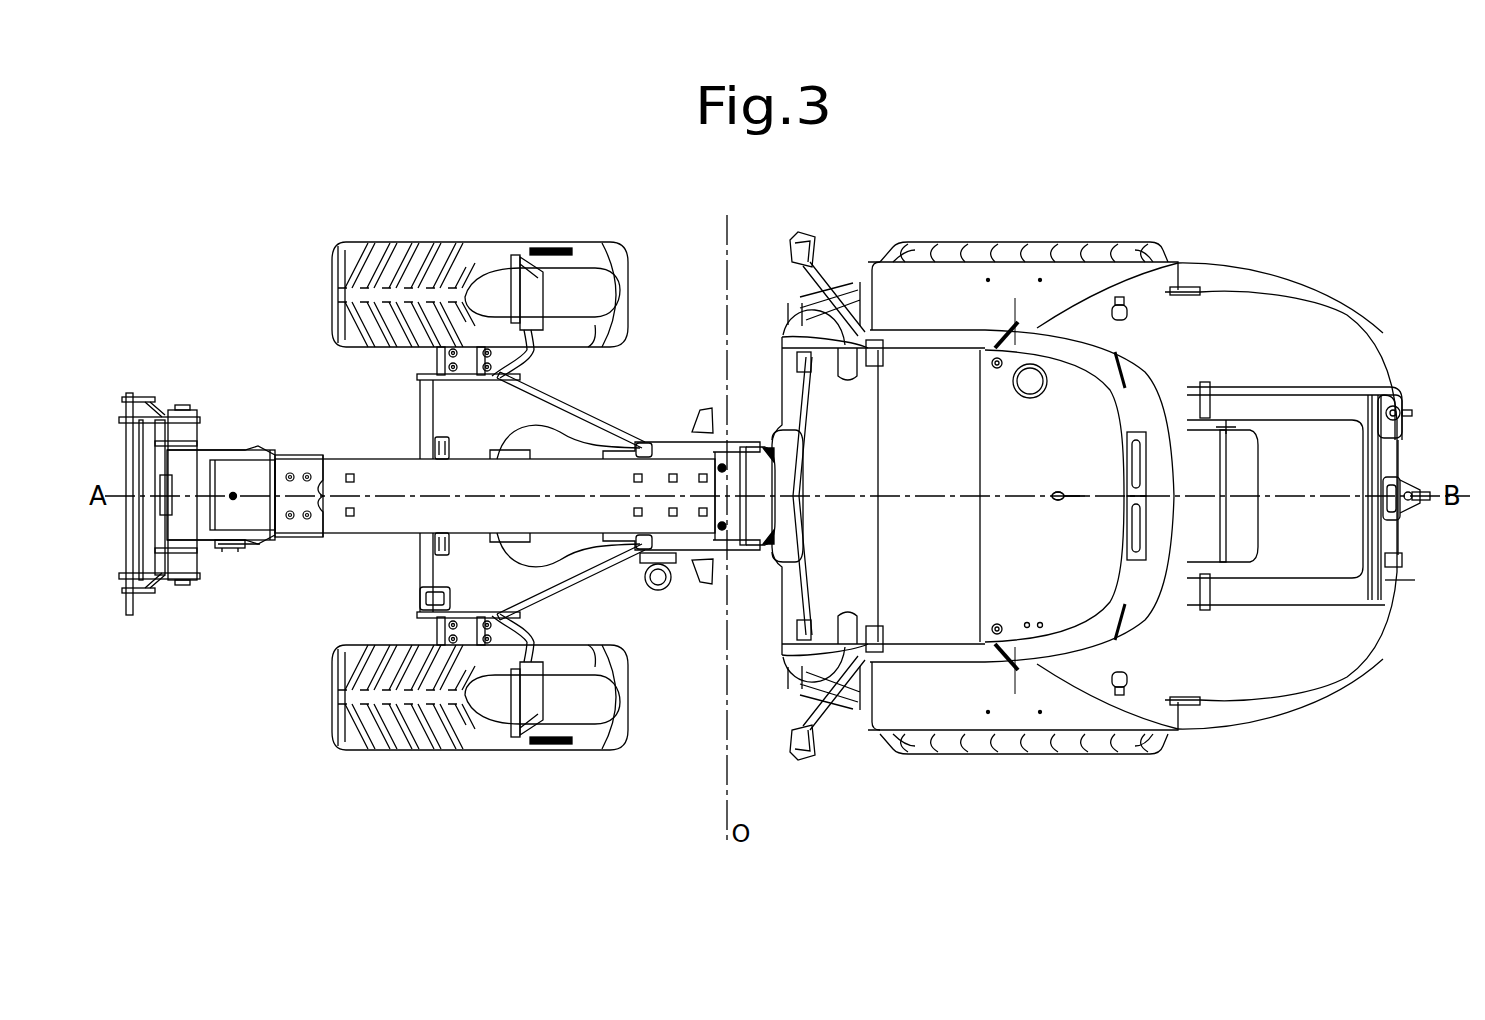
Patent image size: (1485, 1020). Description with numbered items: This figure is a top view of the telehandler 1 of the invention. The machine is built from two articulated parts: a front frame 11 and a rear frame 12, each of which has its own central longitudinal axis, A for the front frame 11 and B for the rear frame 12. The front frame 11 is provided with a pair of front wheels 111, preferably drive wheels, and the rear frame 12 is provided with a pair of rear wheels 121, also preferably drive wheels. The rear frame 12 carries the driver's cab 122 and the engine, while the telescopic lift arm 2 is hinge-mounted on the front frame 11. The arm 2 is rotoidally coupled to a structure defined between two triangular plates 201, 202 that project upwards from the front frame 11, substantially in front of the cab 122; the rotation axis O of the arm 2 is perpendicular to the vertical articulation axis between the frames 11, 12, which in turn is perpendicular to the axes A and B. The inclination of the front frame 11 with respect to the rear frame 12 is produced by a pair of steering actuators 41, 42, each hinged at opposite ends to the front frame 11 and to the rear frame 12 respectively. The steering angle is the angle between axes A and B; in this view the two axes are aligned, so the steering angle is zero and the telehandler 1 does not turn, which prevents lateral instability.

The telehandler 1 is at (1284, 154).
The telescopic lift arm 2 is at (335, 459).
The front frame 11 is at (388, 576).
The rear frame 12 is at (1012, 210).
The steering actuator 41 is at (758, 560).
The steering actuator 42 is at (752, 433).
The front wheels 111 is at (398, 265).
The rear wheels 121 is at (1088, 242).
The driver's cab 122 is at (918, 528).
The triangular plate 201 is at (687, 555).
The triangular plate 202 is at (657, 430).